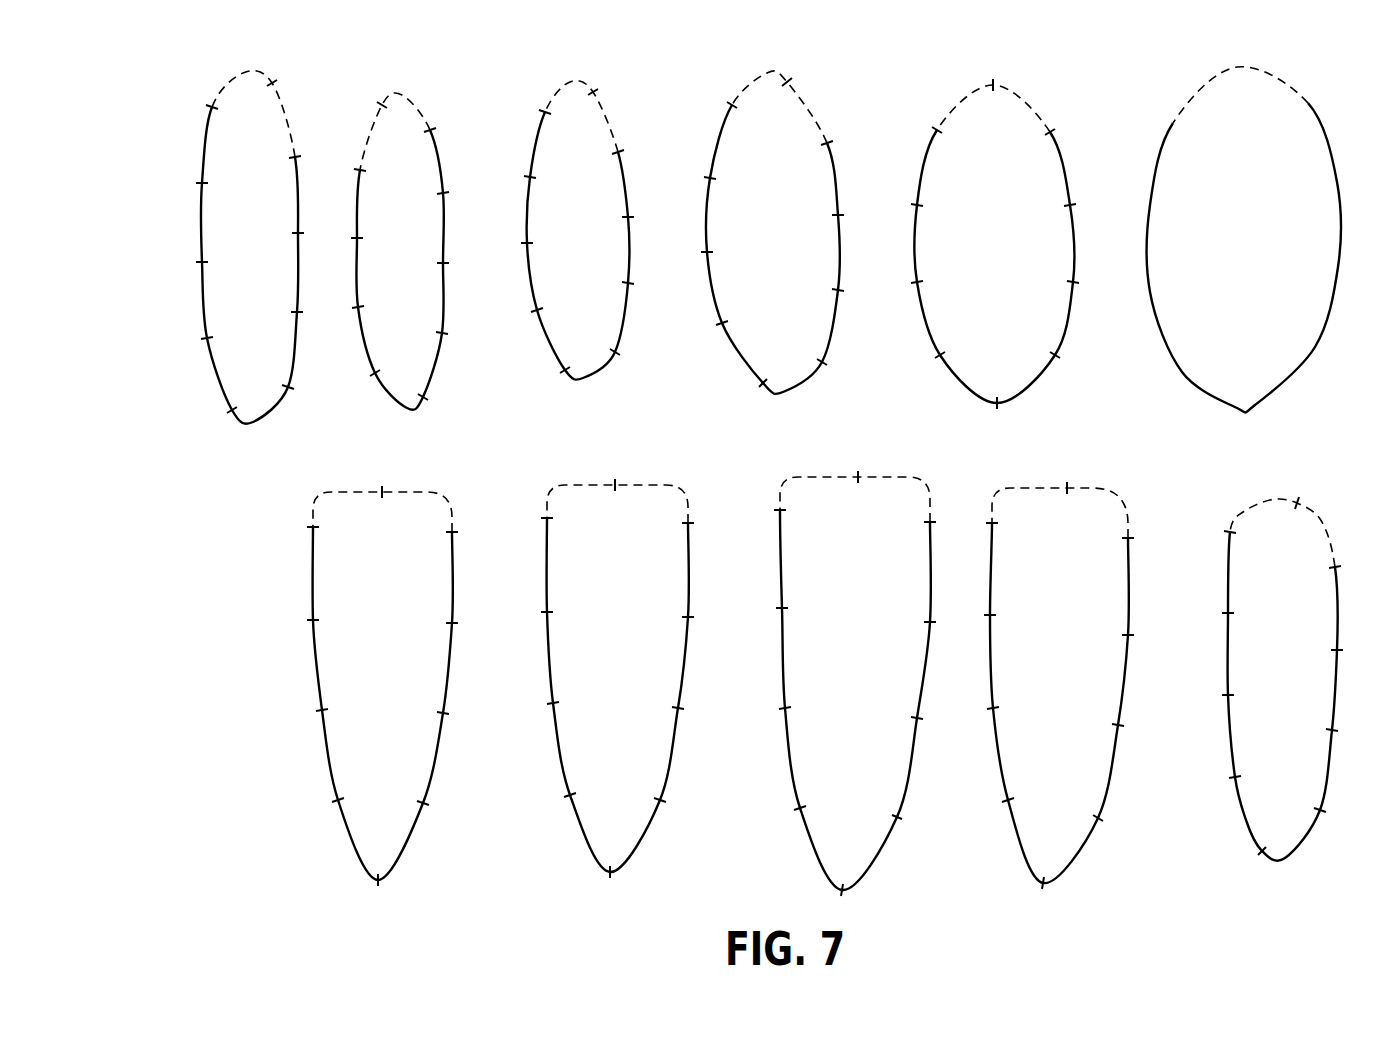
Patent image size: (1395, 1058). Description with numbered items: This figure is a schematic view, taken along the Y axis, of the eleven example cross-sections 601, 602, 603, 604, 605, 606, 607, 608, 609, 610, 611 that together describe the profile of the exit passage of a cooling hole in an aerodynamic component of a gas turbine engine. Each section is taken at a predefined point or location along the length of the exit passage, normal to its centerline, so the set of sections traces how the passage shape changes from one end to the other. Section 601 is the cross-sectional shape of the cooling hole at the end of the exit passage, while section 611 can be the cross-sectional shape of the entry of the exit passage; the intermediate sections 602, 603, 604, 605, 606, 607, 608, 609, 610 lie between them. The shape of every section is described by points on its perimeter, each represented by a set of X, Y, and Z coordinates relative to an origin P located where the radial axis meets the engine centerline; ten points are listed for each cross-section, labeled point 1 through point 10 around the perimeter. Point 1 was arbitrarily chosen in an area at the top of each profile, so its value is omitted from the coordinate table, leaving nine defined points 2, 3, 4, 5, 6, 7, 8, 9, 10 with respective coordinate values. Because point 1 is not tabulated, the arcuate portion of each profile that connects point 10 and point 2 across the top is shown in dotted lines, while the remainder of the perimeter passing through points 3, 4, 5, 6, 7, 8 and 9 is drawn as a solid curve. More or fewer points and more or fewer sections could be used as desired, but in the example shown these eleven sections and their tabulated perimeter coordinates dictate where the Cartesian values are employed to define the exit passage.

The section 601 is at (1244, 242).
The section 602 is at (958, 385).
The section 603 is at (742, 365).
The section 604 is at (553, 355).
The section 605 is at (378, 388).
The section 606 is at (216, 390).
The section 607 is at (1243, 823).
The section 608 is at (1017, 852).
The section 609 is at (808, 845).
The section 610 is at (583, 837).
The section 611 is at (342, 840).
The point 1 is at (1238, 73).
The point 2 is at (1303, 107).
The point 3 is at (1331, 183).
The point 4 is at (1332, 266).
The point 5 is at (1310, 344).
The point 6 is at (1251, 400).
The point 7 is at (1177, 376).
The point 8 is at (1144, 293).
The point 9 is at (1144, 204).
The point 10 is at (1168, 120).